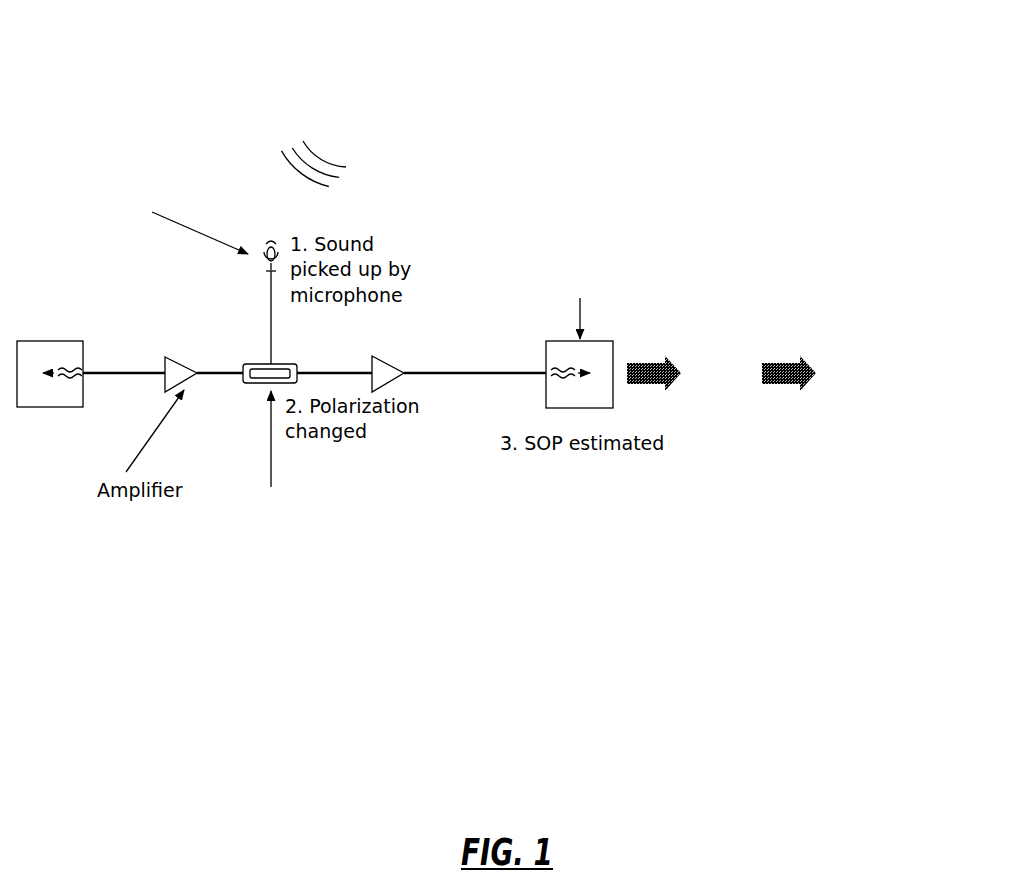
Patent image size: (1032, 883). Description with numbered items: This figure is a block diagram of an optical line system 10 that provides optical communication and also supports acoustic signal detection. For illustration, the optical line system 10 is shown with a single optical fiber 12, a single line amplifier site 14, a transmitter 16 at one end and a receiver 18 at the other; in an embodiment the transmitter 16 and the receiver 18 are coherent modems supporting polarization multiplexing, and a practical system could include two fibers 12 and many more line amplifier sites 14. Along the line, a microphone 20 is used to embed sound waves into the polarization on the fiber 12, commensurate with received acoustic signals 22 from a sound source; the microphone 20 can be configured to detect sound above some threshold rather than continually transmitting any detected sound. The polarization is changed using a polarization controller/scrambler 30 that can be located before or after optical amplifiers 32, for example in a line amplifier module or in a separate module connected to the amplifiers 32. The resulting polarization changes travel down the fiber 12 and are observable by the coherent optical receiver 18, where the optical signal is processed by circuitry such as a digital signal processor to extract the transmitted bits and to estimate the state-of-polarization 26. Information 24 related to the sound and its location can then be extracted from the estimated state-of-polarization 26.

The optical line system 10 is at (556, 66).
The optical fiber 12 is at (450, 373).
The line amplifier site 14 is at (310, 66).
The transmitter 16 is at (89, 303).
The receiver 18 is at (633, 303).
The microphone 20 is at (284, 228).
The acoustic signals 22 is at (409, 110).
The information 24 is at (848, 300).
The estimated state-of-polarization 26 is at (744, 301).
The polarization controller/scrambler 30 is at (287, 364).
The optical amplifiers 32 is at (383, 361).